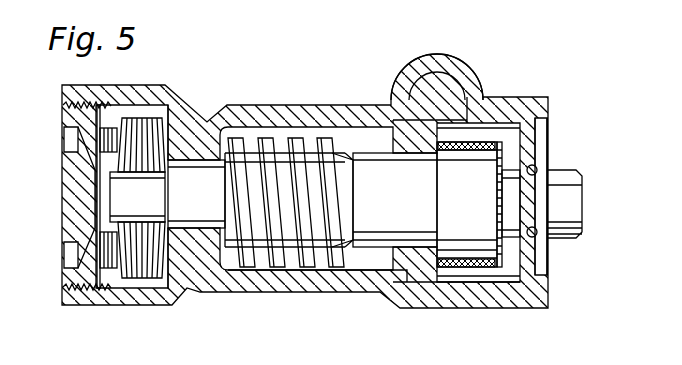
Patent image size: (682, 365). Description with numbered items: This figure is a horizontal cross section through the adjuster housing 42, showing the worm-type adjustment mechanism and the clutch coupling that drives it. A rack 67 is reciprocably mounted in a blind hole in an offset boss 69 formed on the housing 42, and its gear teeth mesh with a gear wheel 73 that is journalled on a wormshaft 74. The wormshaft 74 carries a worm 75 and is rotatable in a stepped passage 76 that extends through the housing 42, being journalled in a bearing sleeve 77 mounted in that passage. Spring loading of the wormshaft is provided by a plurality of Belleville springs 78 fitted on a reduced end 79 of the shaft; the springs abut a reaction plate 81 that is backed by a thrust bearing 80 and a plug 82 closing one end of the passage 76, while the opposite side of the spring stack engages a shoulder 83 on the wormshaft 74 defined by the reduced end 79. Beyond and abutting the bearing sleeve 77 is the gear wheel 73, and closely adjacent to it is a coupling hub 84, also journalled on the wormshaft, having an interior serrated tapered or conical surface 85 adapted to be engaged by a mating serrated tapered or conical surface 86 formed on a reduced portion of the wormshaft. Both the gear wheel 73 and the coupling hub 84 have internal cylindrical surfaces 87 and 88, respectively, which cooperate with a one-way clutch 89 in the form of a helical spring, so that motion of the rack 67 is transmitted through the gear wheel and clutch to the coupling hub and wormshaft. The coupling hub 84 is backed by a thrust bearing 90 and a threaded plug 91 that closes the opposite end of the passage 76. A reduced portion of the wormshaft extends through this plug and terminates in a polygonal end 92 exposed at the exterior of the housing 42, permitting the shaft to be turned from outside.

The housing 42 is at (247, 283).
The rack 67 is at (433, 97).
The offset boss 69 is at (403, 78).
The gear wheel 73 is at (418, 262).
The wormshaft 74 is at (196, 166).
The worm 75 is at (295, 140).
The stepped passage 76 is at (347, 137).
The bearing sleeve 77 is at (360, 268).
The Belleville springs 78 is at (163, 112).
The reduced end 79 is at (148, 203).
The thrust bearing 80 is at (113, 293).
The reaction plate 81 is at (112, 137).
The plug 82 is at (72, 212).
The shoulder 83 is at (160, 203).
The coupling hub 84 is at (490, 133).
The serrated tapered surface 85 is at (521, 108).
The serrated tapered surface 86 is at (492, 186).
The internal cylindrical surface 87 is at (443, 262).
The internal cylindrical surface 88 is at (465, 142).
The one-way clutch 89 is at (481, 262).
The thrust bearing 90 is at (528, 288).
The threaded plug 91 is at (555, 115).
The polygonal end 92 is at (561, 170).